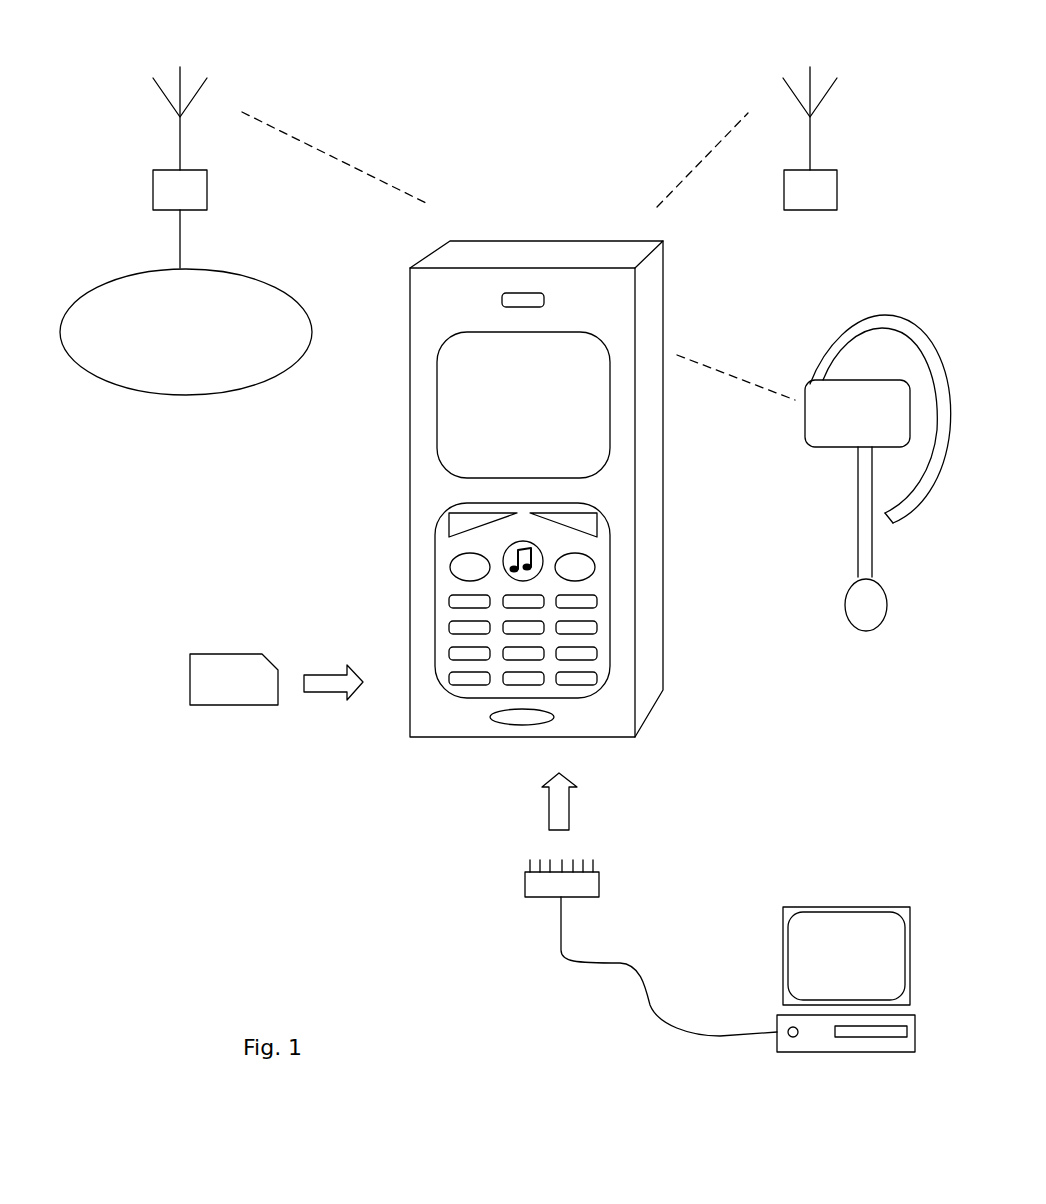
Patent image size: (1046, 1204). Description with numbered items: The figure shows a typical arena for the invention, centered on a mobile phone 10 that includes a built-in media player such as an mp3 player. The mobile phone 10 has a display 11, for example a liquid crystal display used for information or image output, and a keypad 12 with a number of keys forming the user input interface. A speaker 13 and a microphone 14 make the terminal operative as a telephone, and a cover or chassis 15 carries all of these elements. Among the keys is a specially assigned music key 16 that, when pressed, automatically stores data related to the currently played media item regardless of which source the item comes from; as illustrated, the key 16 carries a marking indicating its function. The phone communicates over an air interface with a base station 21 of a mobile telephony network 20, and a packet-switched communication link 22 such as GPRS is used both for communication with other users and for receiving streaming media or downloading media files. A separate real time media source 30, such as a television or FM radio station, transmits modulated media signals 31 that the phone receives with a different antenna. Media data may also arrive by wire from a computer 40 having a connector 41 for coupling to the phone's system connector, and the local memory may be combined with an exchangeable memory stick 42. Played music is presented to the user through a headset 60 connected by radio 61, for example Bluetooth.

The mobile phone 10 is at (591, 489).
The display 11 is at (535, 381).
The keypad 12 is at (445, 552).
The speaker 13 is at (502, 300).
The microphone 14 is at (515, 726).
The cover or chassis 15 is at (410, 290).
The key 16 is at (540, 553).
The mobile telephony network 20 is at (182, 347).
The base station 21 is at (183, 55).
The communication link 22 is at (335, 148).
The media source 30 is at (787, 48).
The media signals 31 is at (700, 157).
The computer 40 is at (843, 907).
The connector 41 is at (593, 882).
The memory stick 42 is at (210, 705).
The headset 60 is at (848, 330).
The radio 61 is at (705, 355).